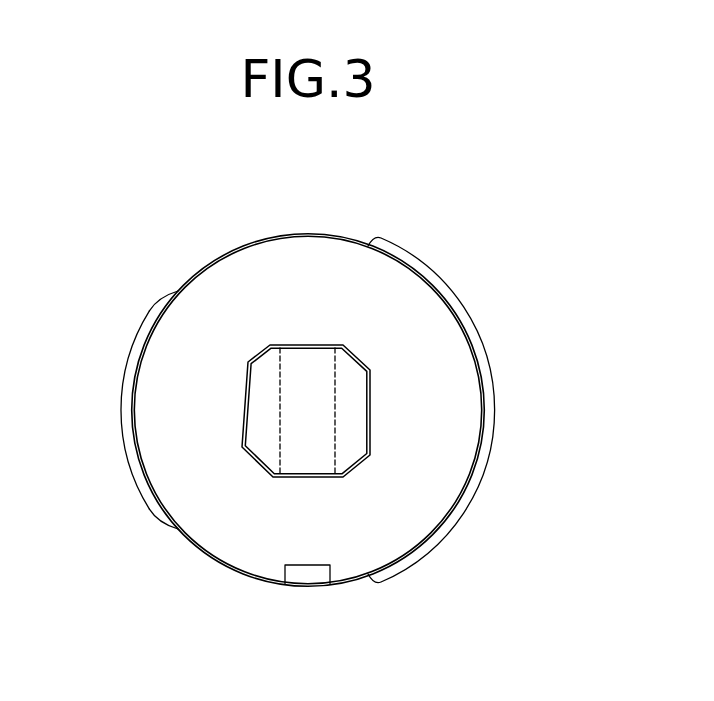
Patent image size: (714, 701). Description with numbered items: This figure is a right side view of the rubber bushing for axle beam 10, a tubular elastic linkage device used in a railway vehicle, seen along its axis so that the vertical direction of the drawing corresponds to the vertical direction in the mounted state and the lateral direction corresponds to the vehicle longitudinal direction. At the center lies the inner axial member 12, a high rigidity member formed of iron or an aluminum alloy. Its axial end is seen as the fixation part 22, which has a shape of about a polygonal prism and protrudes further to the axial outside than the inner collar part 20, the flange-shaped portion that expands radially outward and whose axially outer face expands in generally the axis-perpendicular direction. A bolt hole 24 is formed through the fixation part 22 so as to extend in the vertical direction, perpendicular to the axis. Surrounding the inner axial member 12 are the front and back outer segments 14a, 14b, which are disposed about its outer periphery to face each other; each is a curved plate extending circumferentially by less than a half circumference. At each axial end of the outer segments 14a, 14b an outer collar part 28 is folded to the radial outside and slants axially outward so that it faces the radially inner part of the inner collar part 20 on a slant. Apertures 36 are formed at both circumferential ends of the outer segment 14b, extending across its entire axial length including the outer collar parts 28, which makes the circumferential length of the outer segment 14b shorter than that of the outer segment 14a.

The rubber bushing for axle beam 10 is at (490, 247).
The inner axial member 12 is at (246, 240).
The front outer segment 14a is at (499, 352).
The back outer segment 14b is at (130, 327).
The inner collar part 20 is at (248, 540).
The fixation part 22 is at (262, 432).
The bolt hole 24 is at (280, 437).
The outer collar part 28 is at (125, 420).
The aperture 36 is at (178, 290).